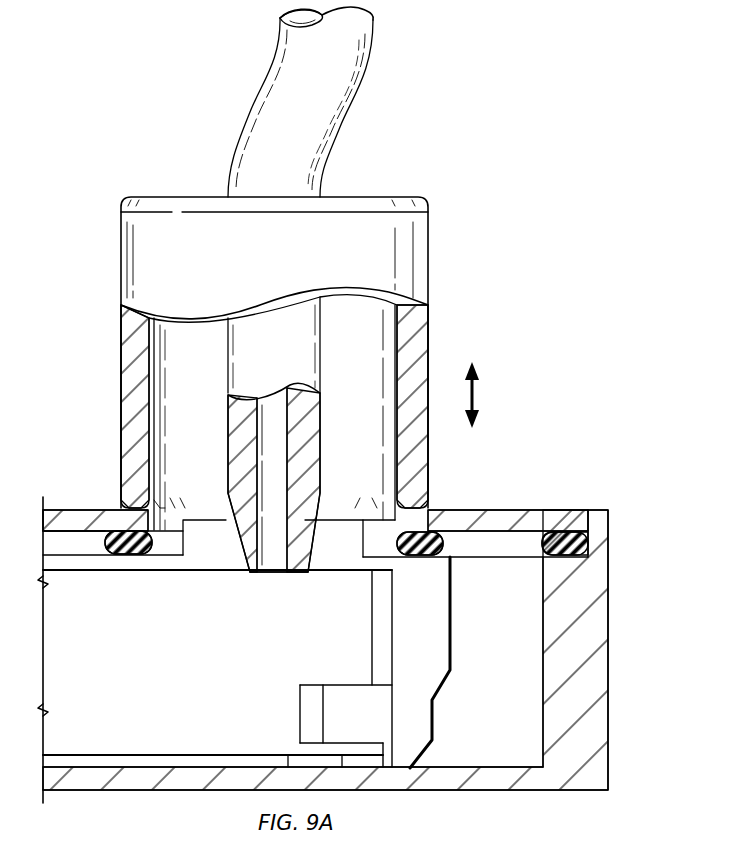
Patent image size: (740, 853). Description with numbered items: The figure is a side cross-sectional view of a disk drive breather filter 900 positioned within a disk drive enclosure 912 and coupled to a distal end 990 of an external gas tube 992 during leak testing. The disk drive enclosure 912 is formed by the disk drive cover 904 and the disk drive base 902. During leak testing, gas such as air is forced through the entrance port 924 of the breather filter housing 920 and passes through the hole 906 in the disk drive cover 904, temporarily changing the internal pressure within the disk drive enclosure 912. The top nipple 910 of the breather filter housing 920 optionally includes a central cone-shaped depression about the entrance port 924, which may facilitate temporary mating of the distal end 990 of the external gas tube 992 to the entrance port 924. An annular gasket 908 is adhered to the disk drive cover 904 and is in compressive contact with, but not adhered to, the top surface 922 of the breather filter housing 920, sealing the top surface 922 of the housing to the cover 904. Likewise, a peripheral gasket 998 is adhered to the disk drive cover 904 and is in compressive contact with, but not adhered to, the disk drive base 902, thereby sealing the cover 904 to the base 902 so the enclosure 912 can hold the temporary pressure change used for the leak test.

The external gas tube 992 is at (375, 42).
The distal end of the external gas tube 990 is at (322, 420).
The disk drive cover 904 is at (90, 510).
The top nipple 910 is at (207, 530).
The hole 906 is at (393, 522).
The annular gasket 908 is at (447, 542).
The peripheral gasket 998 is at (540, 540).
The top surface of the breather filter housing 922 is at (178, 548).
The entrance port 924 is at (243, 573).
The breather filter housing 920 is at (427, 623).
The disk drive breather filter 900 is at (460, 663).
The disk drive enclosure 912 is at (511, 722).
The disk drive base 902 is at (608, 727).